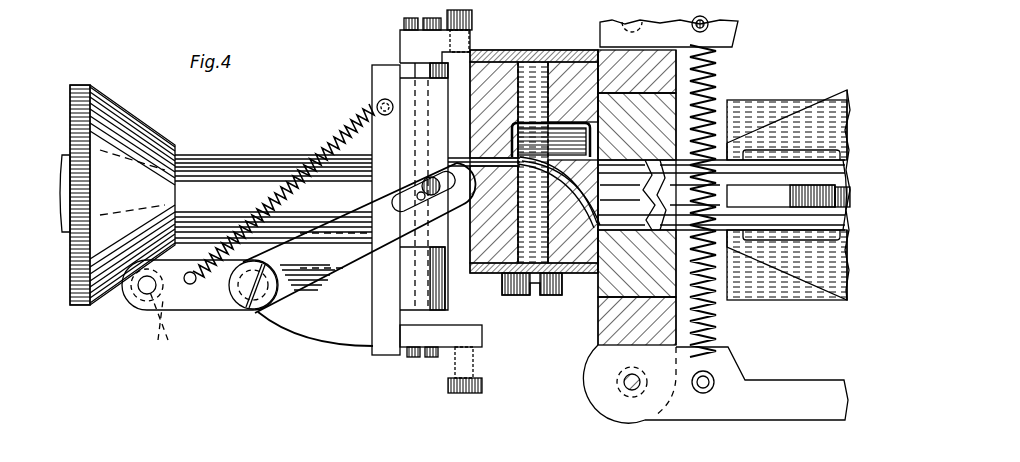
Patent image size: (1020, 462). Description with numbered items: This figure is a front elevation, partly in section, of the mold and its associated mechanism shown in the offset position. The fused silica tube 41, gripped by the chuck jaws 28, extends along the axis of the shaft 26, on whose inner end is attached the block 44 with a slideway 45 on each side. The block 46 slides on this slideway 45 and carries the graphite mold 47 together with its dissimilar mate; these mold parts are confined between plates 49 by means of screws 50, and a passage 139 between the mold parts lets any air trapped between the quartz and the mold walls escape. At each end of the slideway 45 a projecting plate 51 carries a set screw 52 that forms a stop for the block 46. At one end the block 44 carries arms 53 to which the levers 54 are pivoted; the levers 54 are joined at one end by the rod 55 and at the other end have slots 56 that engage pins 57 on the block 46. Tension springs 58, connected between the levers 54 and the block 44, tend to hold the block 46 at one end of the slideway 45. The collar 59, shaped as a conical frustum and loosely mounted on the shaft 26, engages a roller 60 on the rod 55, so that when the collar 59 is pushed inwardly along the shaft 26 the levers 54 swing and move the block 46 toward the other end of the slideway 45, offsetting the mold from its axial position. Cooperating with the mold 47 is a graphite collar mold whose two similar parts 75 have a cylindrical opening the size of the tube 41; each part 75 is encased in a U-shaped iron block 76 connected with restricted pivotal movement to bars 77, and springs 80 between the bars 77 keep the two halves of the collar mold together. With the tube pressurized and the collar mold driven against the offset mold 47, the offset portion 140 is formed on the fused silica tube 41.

The shaft 26 is at (212, 165).
The chuck jaws 28 is at (757, 195).
The fused silica tube 41 is at (720, 172).
The block 44 is at (383, 86).
The slideway 45 is at (423, 279).
The block 46 is at (423, 97).
The graphite mold 47 is at (502, 73).
The plates 49 is at (568, 52).
The screws 50 is at (527, 293).
The projecting plate 51 is at (413, 43).
The set screw 52 is at (470, 40).
The arms 53 is at (341, 326).
The levers 54 is at (213, 302).
The rod 55 is at (141, 288).
The slots 56 is at (380, 206).
The pins 57 is at (426, 185).
The tension springs 58 is at (316, 152).
The collar 59 is at (135, 118).
The roller 60 is at (162, 327).
The collar mold part 75 is at (650, 125).
The U-shaped iron block 76 is at (657, 73).
The bars 77 is at (741, 31).
The springs 80 is at (714, 284).
The passage 139 is at (487, 148).
The offset portion 140 is at (551, 149).